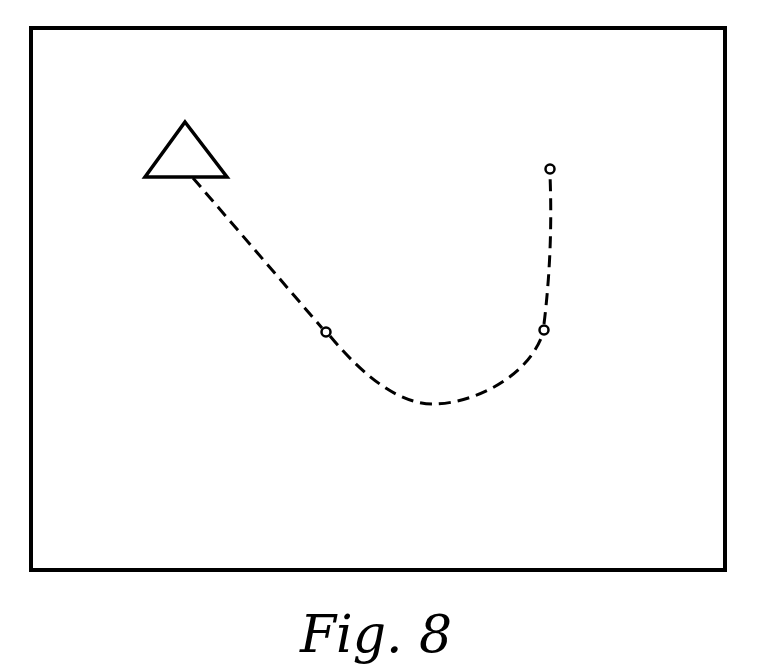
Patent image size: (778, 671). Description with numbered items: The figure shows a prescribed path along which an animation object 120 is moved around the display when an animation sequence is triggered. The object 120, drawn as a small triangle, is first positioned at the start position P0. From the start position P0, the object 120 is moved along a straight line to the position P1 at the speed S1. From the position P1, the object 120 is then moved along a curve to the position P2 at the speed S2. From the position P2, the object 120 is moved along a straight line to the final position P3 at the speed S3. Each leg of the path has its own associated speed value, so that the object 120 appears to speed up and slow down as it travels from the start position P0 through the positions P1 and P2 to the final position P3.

The object 120 is at (207, 145).
The start position P0 is at (171, 199).
The position P1 is at (306, 348).
The position P2 is at (567, 346).
The final position P3 is at (572, 175).
The speed S1 is at (257, 253).
The speed S2 is at (436, 370).
The speed S3 is at (570, 249).